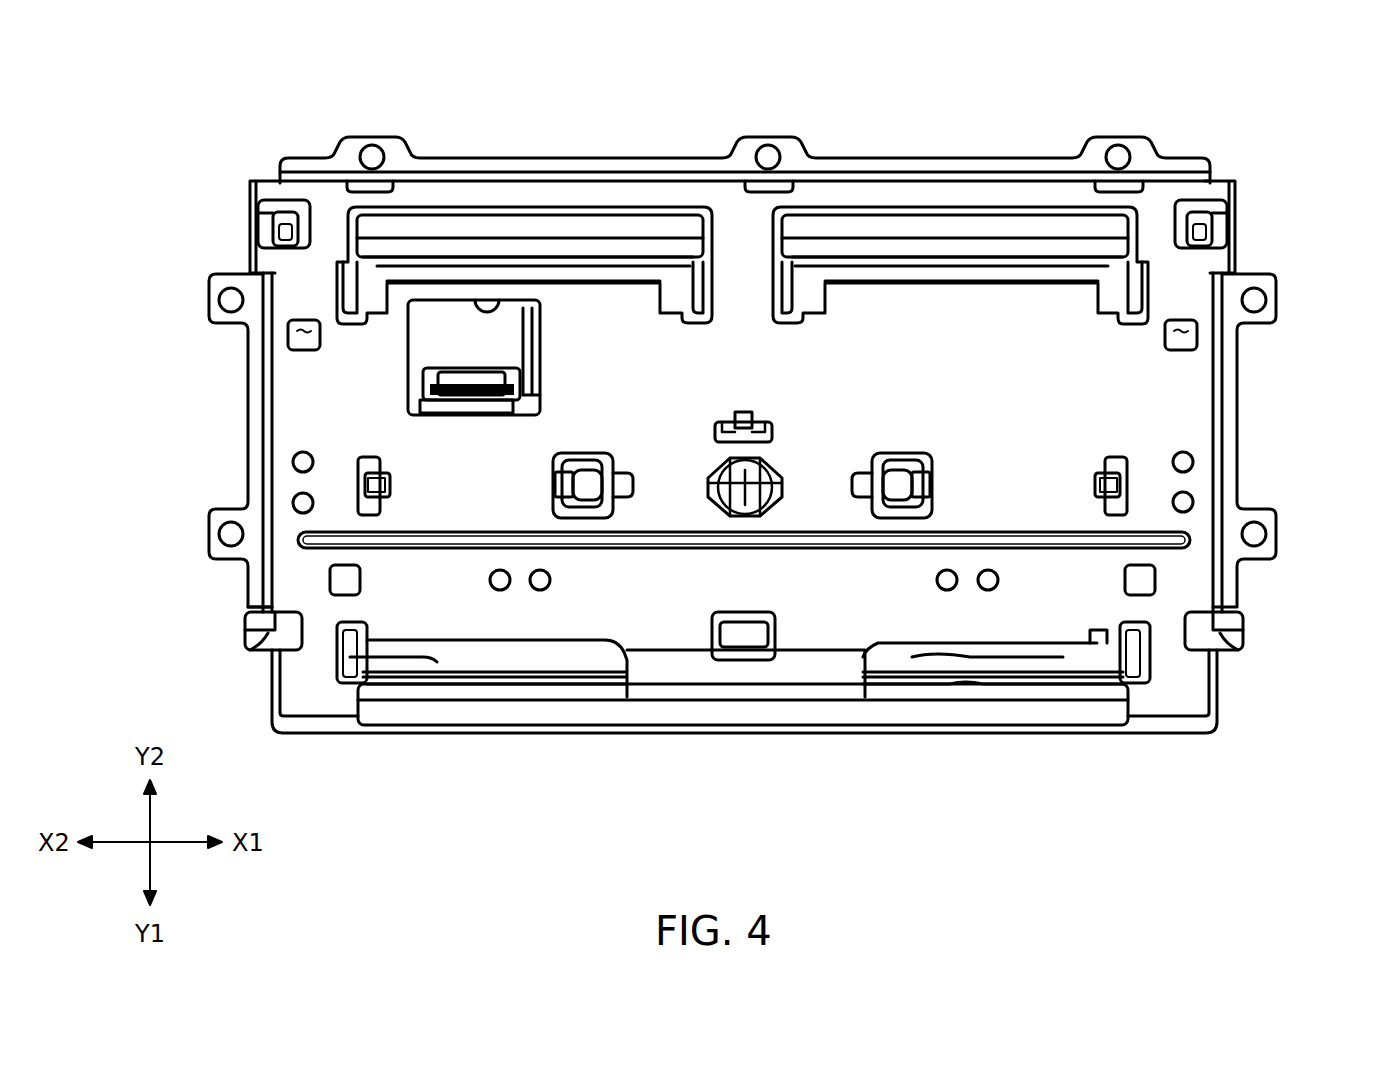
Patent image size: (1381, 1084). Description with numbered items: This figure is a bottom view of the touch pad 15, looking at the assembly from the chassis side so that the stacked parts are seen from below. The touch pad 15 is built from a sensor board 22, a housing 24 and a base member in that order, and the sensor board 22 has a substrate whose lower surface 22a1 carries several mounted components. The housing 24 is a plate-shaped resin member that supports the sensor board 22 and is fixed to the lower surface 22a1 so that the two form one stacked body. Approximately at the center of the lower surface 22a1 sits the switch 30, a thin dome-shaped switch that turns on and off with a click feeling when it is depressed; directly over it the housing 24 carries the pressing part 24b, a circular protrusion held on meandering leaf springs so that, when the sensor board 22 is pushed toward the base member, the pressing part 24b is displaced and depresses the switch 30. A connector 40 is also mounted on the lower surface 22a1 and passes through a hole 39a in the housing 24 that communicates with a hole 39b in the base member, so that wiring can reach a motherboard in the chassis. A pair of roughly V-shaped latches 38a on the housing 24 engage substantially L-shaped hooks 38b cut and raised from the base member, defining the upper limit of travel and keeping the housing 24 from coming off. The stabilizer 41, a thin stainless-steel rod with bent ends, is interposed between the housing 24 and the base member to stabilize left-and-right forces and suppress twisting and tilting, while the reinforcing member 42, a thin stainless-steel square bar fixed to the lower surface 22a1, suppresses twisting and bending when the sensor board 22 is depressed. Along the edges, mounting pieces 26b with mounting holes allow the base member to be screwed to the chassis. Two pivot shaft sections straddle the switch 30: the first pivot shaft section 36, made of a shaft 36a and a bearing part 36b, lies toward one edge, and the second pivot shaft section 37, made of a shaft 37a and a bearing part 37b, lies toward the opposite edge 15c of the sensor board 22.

The touch pad 15 is at (210, 101).
The edge 15c is at (648, 714).
The sensor board 22 is at (325, 736).
The lower surface 22a1 is at (437, 346).
The housing 24 is at (1184, 407).
The pressing part 24b is at (752, 500).
The mounting pieces 26b is at (375, 138).
The switch 30 is at (762, 470).
The pivot shaft section 36 is at (150, 190).
The shaft 36a is at (262, 212).
The bearing part 36b is at (262, 230).
The pivot shaft section 37 is at (136, 612).
The shaft 37a is at (262, 621).
The bearing part 37b is at (268, 646).
The latches 38a is at (588, 465).
The hooks 38b is at (557, 486).
The hole 39a is at (491, 298).
The hole 39b is at (471, 384).
The connector 40 is at (492, 378).
The stabilizer 41 is at (446, 254).
The reinforcing member 42 is at (625, 222).